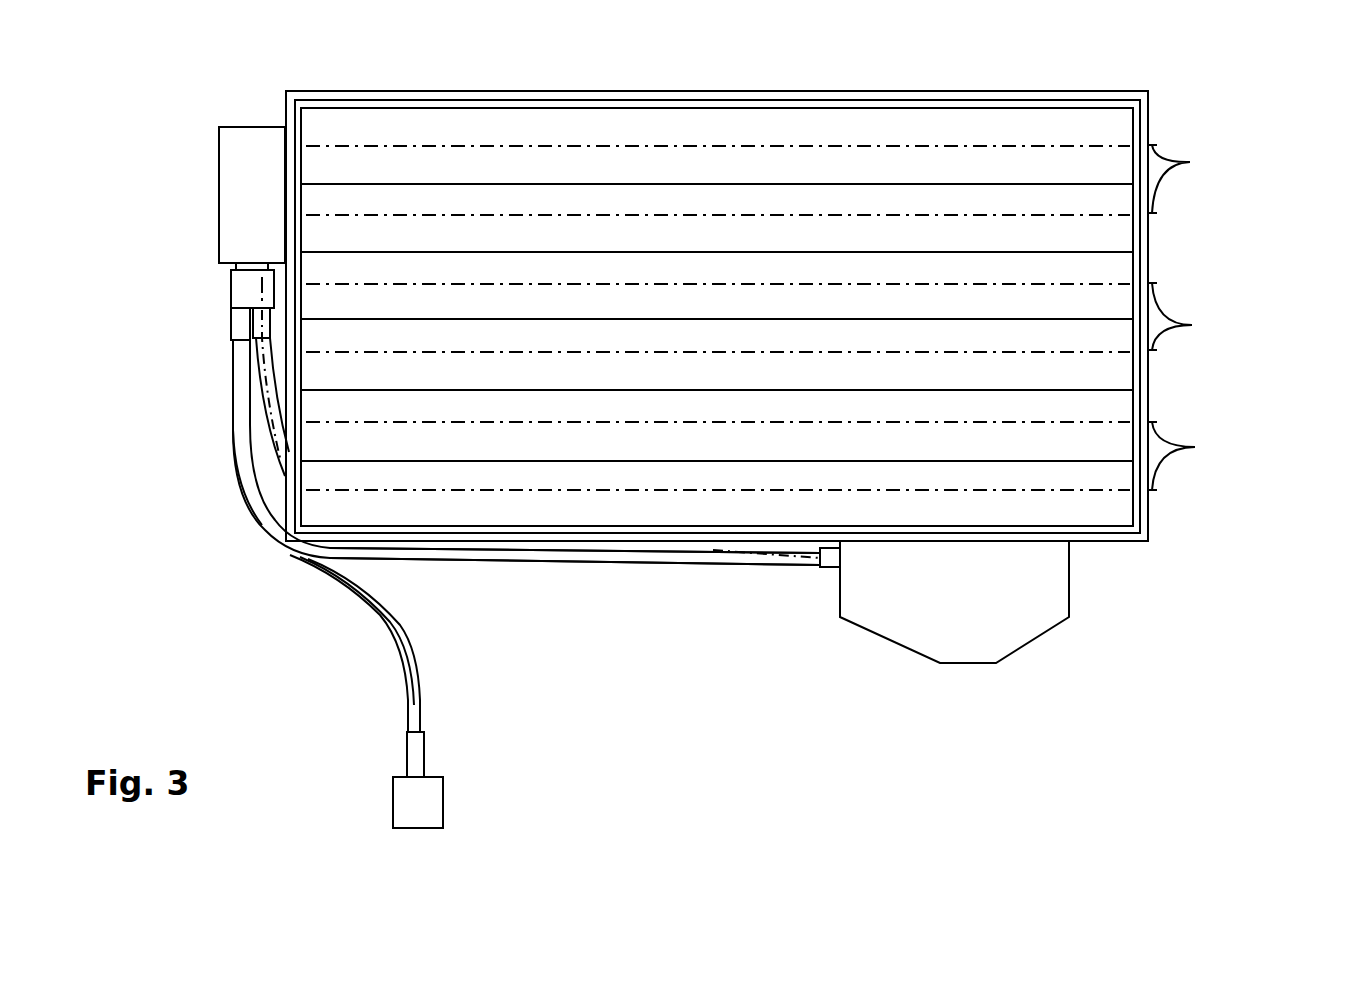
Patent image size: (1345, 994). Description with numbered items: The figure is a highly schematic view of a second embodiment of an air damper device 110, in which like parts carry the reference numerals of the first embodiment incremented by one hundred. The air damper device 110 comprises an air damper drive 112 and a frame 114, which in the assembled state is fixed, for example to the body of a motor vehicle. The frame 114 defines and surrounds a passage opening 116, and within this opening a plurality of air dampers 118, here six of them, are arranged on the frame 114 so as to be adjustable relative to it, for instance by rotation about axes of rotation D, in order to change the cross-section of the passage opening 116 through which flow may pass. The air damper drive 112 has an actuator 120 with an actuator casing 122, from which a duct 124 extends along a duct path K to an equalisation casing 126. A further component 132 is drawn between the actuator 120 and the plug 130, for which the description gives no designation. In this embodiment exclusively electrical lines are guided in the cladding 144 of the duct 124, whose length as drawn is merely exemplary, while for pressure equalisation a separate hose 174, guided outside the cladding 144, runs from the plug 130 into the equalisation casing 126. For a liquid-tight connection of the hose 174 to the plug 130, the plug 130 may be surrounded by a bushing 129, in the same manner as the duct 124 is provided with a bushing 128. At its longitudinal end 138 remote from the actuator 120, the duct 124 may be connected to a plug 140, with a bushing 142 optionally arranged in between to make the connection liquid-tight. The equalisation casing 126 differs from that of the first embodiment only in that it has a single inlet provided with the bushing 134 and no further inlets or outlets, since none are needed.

The air damper device 110 is at (1232, 110).
The air damper drive 112 is at (258, 549).
The frame 114 is at (1102, 535).
The passage opening 116 is at (912, 126).
The air damper 118 is at (1112, 132).
The actuator 120 is at (270, 210).
The actuator casing 122 is at (238, 126).
The duct 124 is at (245, 428).
The equalisation casing 126 is at (980, 605).
The bushing 128 is at (237, 322).
The bushing 129 is at (255, 323).
The plug 130 is at (248, 291).
The connection 132 is at (232, 266).
The bushing 134 is at (830, 562).
The longitudinal end 138 is at (378, 745).
The plug 140 is at (430, 805).
The bushing 142 is at (425, 755).
The cladding 144 is at (247, 460).
The hose 174 is at (553, 551).
The duct path K is at (266, 365).
The axes of rotation D is at (1188, 317).